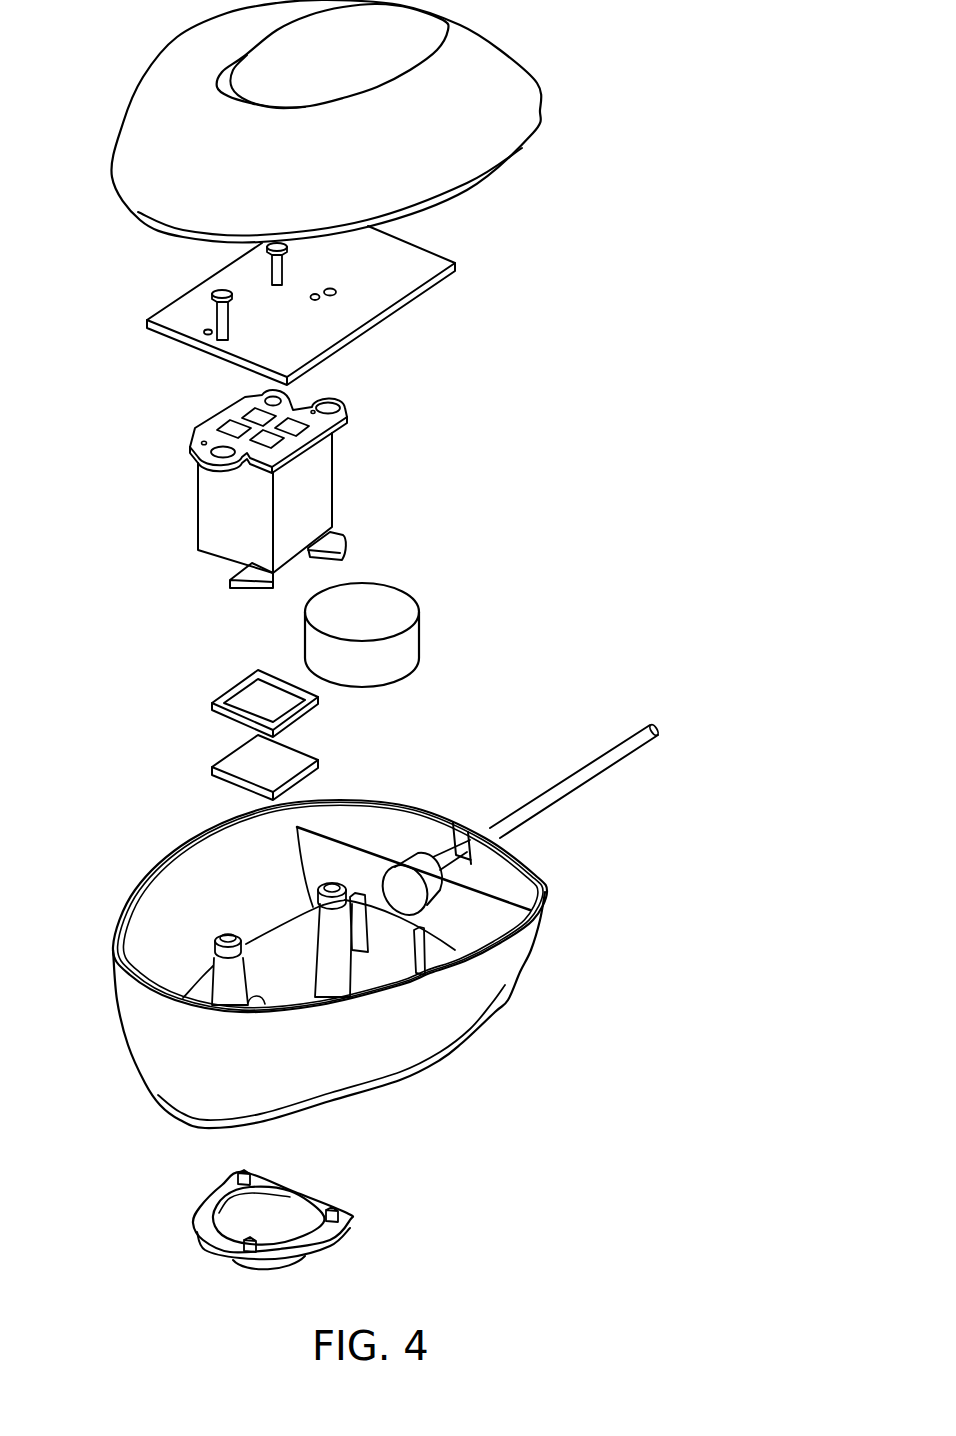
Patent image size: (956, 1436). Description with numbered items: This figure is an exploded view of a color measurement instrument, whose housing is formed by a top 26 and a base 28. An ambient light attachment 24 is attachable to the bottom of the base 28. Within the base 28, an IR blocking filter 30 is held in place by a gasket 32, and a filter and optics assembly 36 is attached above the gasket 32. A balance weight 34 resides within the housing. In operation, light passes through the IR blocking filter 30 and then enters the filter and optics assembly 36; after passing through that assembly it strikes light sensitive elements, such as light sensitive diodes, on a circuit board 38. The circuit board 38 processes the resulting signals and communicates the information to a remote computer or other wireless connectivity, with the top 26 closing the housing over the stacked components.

The ambient light attachment 24 is at (264, 1272).
The top 26 is at (540, 86).
The base 28 is at (130, 1046).
The IR blocking filter 30 is at (319, 763).
The gasket 32 is at (212, 703).
The balance weight 34 is at (420, 623).
The filter and optics assembly 36 is at (333, 470).
The circuit board 38 is at (147, 321).